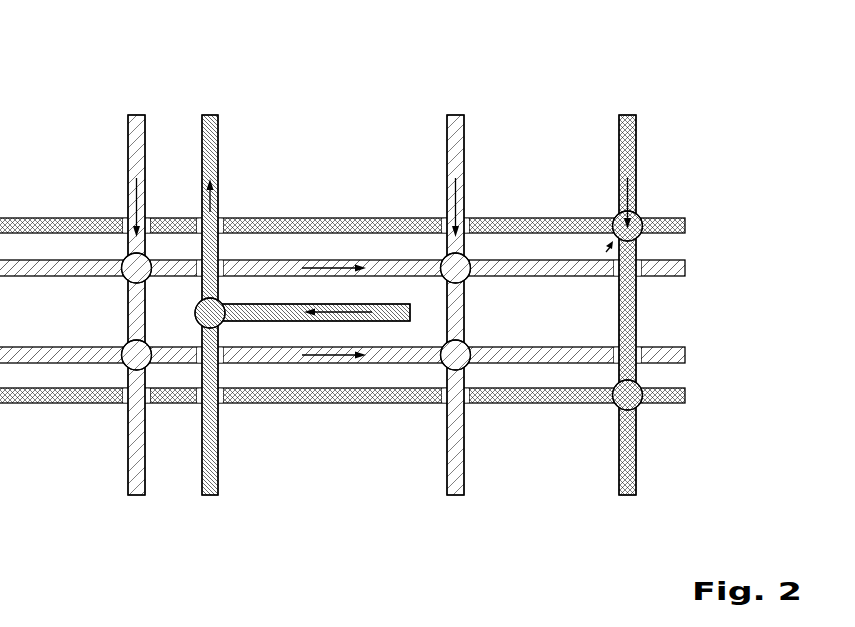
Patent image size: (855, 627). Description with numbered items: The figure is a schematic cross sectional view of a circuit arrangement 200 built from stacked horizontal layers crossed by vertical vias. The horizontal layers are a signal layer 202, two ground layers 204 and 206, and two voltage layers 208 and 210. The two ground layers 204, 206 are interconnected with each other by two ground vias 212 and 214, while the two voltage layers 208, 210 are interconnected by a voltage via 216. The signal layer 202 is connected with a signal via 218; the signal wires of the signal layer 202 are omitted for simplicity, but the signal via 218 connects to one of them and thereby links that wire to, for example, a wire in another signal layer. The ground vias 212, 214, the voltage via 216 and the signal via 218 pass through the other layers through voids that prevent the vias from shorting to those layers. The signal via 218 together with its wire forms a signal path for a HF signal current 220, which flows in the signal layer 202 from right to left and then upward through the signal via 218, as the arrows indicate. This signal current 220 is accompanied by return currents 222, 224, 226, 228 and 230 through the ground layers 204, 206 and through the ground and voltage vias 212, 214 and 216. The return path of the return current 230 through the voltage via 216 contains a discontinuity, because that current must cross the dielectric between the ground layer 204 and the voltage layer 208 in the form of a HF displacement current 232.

The circuit arrangement 200 is at (690, 122).
The signal layer 202 is at (412, 310).
The ground layer 204 is at (687, 268).
The ground layer 206 is at (687, 355).
The voltage layer 208 is at (687, 226).
The voltage layer 210 is at (687, 396).
The ground via 212 is at (135, 115).
The ground via 214 is at (450, 115).
The voltage via 216 is at (627, 115).
The signal via 218 is at (212, 115).
The HF signal current 220 is at (214, 208).
The return current 222 is at (320, 362).
The return current 224 is at (330, 262).
The return current 226 is at (136, 192).
The return current 228 is at (455, 203).
The return current 230 is at (636, 197).
The HF displacement current 232 is at (606, 252).